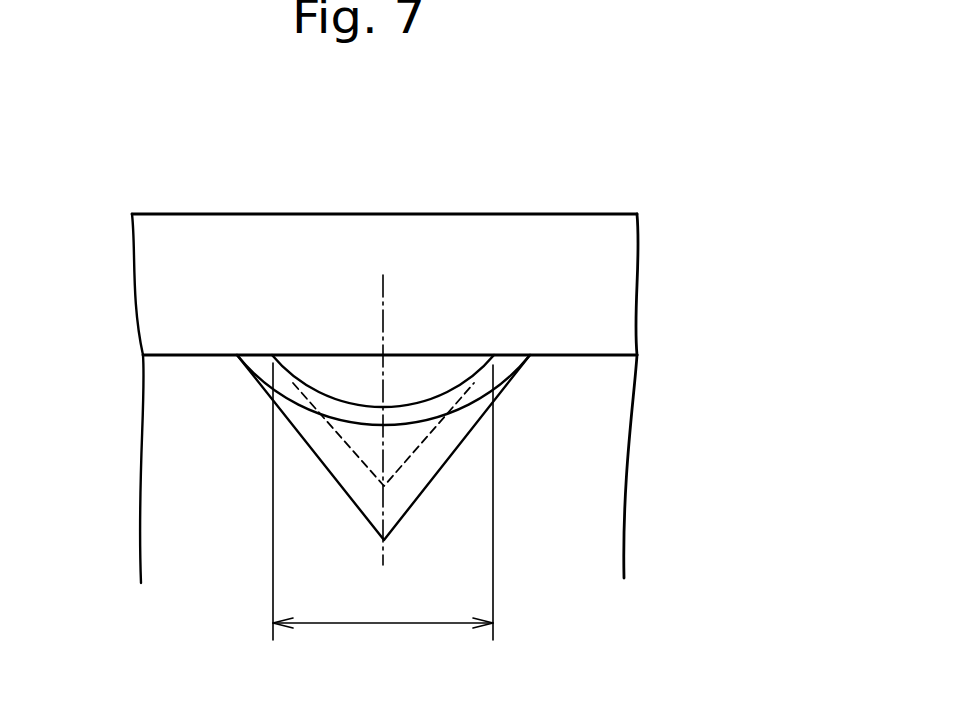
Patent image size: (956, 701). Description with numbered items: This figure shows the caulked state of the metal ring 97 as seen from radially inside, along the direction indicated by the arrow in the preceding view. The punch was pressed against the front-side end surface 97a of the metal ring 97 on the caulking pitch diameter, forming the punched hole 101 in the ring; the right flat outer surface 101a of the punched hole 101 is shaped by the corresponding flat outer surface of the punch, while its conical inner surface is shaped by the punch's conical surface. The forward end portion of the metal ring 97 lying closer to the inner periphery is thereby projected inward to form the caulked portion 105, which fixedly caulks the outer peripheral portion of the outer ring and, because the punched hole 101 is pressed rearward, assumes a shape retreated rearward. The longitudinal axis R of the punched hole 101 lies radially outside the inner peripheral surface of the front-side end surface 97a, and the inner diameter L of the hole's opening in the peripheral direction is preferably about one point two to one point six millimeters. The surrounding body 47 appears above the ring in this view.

The holder body 47 is at (492, 277).
The metal ring 97 is at (533, 468).
The front-side end surface 97a is at (585, 355).
The punched hole 101 is at (347, 402).
The right flat outer surface 101a is at (347, 372).
The caulked portion 105 is at (402, 442).
The longitudinal axis of punched hole R is at (382, 333).
The inner diameter of punched hole opening L is at (383, 501).